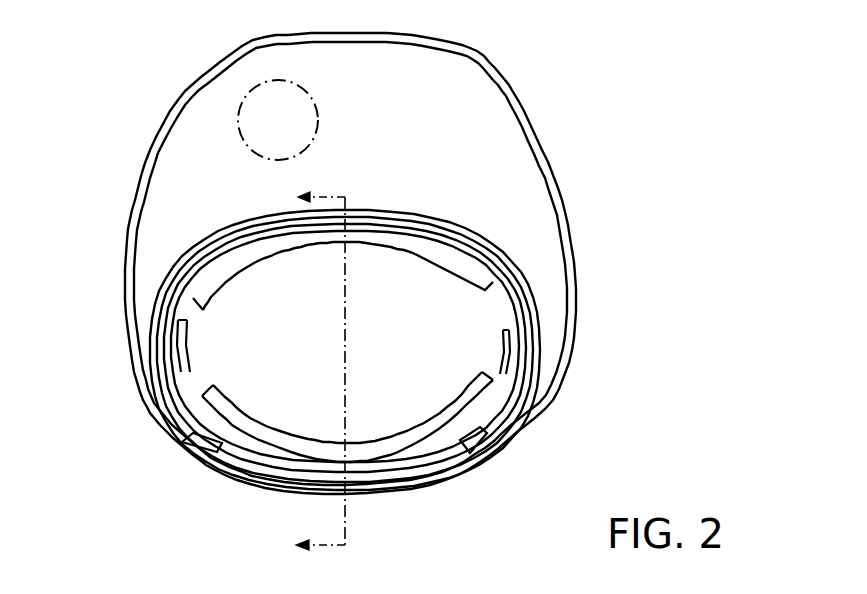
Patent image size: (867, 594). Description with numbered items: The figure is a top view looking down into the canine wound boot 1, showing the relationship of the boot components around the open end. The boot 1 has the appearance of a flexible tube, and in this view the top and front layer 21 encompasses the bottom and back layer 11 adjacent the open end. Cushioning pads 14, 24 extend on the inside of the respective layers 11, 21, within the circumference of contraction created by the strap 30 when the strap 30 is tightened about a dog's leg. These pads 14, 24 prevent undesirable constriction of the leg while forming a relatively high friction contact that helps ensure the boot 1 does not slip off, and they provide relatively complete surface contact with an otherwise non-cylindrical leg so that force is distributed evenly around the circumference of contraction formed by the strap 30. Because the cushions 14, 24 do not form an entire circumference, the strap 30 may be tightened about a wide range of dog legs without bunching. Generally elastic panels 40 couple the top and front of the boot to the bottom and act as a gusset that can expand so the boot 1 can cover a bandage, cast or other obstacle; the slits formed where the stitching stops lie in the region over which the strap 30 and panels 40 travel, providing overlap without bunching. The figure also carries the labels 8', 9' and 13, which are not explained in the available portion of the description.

The boot 1 is at (107, 58).
The section line 8' is at (311, 366).
The opening 9' is at (263, 120).
The bottom and back layer 11 is at (207, 403).
The section line 13 is at (330, 492).
The cushioning pad 14 is at (410, 437).
The top and front layer 21 is at (502, 302).
The cushioning pad 24 is at (417, 254).
The strap 30 is at (532, 393).
The elastic panels 40 is at (132, 325).